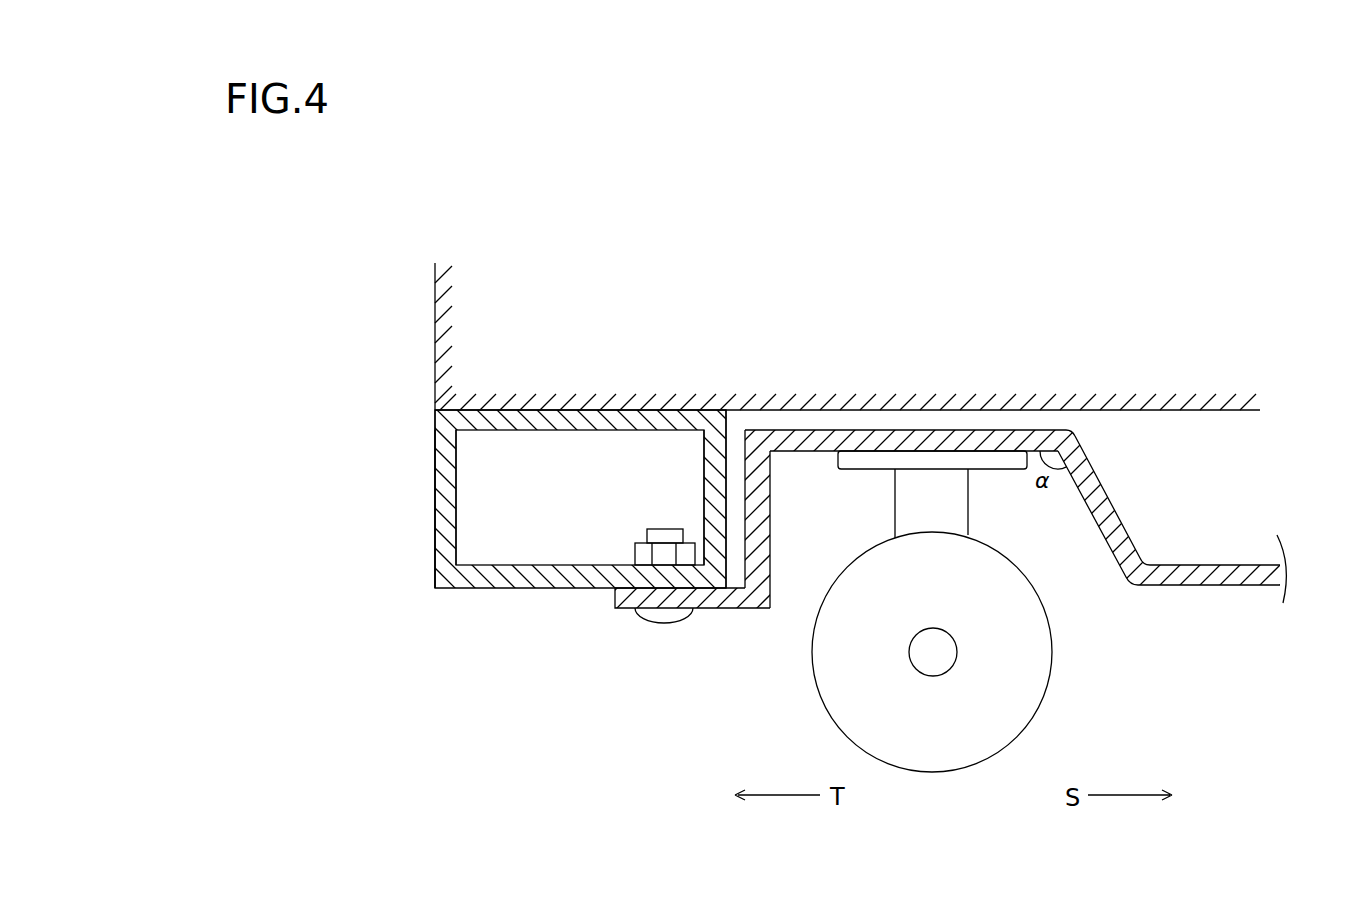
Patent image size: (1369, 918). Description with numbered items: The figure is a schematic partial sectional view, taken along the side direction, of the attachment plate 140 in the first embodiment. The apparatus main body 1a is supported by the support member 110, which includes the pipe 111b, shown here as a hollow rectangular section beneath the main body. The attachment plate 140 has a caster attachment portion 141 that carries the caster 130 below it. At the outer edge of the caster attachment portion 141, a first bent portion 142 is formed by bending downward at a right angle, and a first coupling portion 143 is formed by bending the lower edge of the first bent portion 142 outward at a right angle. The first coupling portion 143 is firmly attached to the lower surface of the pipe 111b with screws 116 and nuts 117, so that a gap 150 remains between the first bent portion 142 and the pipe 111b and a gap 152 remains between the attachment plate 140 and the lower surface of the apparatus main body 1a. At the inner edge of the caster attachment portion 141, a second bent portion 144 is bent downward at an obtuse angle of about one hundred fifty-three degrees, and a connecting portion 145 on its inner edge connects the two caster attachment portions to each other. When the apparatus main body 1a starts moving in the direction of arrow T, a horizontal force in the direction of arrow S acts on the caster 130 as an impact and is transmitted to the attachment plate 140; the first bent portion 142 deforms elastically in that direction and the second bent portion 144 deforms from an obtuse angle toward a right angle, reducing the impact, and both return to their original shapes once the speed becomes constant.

The apparatus main body 1a is at (433, 310).
The support member 110 is at (412, 438).
The pipe 111b is at (433, 480).
The screw 116 is at (653, 627).
The nut 117 is at (627, 553).
The caster 130 is at (1065, 635).
The attachment plate 140 is at (913, 430).
The caster attachment portion 141 is at (803, 430).
The first bent portion 142 is at (772, 517).
The first coupling portion 143 is at (718, 612).
The second bent portion 144 is at (1110, 495).
The connecting portion 145 is at (1215, 553).
The gap 150 is at (740, 447).
The gap 152 is at (845, 441).